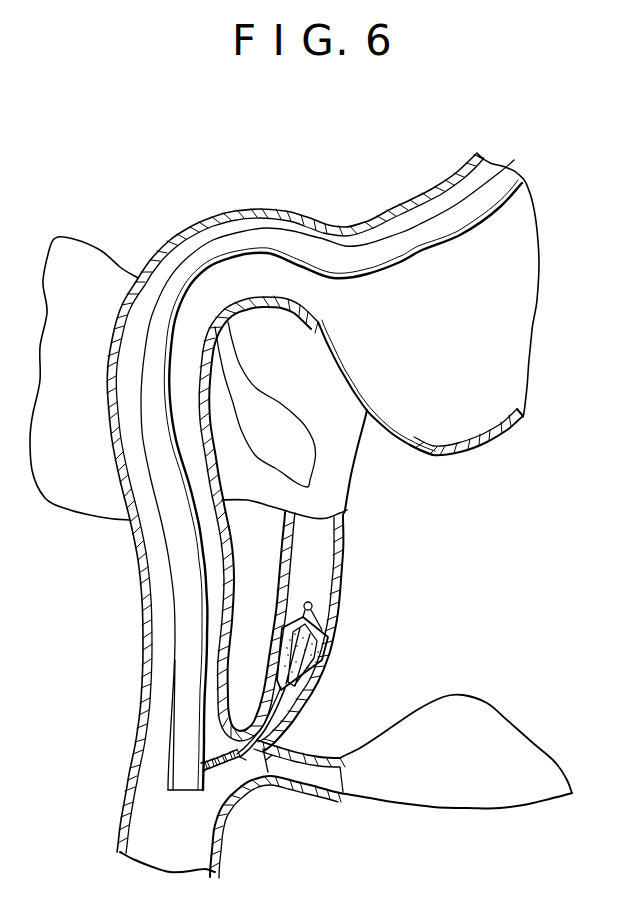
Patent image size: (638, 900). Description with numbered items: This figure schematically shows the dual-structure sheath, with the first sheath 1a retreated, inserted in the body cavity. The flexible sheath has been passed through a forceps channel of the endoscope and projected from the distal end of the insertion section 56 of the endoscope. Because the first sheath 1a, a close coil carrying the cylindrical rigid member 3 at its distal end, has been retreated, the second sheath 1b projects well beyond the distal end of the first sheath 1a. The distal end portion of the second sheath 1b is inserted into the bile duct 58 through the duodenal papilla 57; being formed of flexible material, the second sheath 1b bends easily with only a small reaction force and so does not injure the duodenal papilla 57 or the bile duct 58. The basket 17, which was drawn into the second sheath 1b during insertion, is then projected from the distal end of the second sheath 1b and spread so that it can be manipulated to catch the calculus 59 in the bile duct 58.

The insertion section 56 is at (182, 603).
The duodenal papilla 57 is at (234, 726).
The bile duct 58 is at (315, 550).
The calculus 59 is at (328, 650).
The basket 17 is at (320, 617).
The first sheath 1a is at (205, 772).
The second sheath 1b is at (270, 763).
The cylindrical rigid member 3 is at (243, 763).